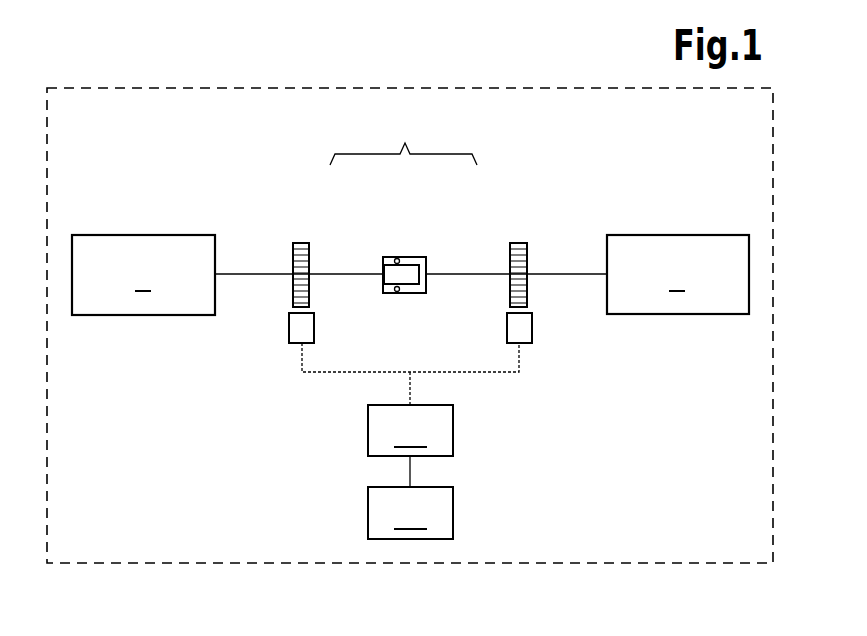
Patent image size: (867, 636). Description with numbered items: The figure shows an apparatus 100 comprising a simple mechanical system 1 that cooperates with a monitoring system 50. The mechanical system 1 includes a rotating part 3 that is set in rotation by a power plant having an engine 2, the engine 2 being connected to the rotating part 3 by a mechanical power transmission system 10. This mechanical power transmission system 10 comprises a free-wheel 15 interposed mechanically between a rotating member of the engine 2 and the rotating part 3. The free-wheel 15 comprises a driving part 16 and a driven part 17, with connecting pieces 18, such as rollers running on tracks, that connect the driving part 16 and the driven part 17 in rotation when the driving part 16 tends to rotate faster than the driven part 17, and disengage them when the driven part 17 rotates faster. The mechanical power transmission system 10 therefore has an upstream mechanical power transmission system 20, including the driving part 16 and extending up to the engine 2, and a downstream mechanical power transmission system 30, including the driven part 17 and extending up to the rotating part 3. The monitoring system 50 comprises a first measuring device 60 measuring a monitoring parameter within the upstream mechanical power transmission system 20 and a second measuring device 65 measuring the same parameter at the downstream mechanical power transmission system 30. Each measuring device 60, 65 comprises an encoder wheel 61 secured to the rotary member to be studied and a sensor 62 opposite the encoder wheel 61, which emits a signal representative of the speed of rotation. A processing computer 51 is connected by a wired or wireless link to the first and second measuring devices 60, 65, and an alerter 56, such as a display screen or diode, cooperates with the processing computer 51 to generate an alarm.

The mechanical system 1 is at (494, 413).
The engine 2 is at (143, 275).
The rotating part 3 is at (678, 274).
The mechanical power transmission system 10 is at (257, 320).
The free-wheel 15 is at (403, 204).
The driving part 16 is at (392, 273).
The driven part 17 is at (415, 257).
The connecting pieces 18 is at (397, 257).
The upstream mechanical power transmission system 20 is at (263, 273).
The downstream mechanical power transmission system 30 is at (556, 273).
The monitoring system 50 is at (477, 472).
The processing computer 51 is at (410, 430).
The alerter 56 is at (410, 513).
The first measuring device 60 is at (329, 311).
The encoder wheel 61 is at (306, 242).
The sensor 62 is at (296, 343).
The second measuring device 65 is at (552, 314).
The apparatus 100 is at (152, 88).